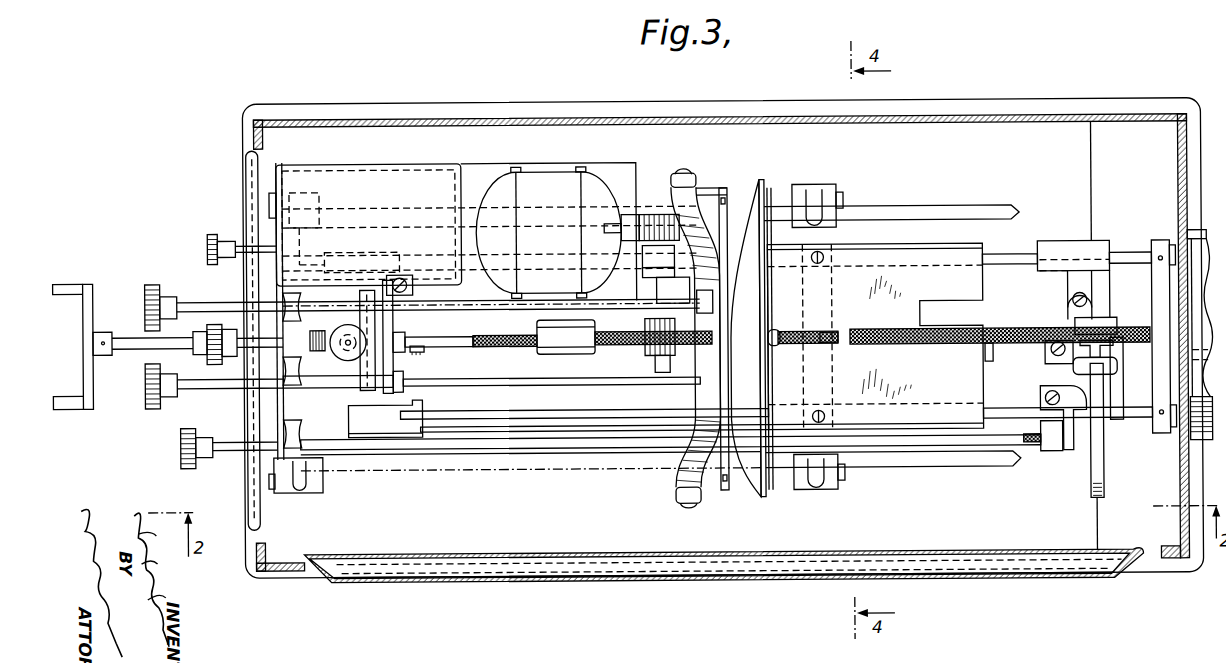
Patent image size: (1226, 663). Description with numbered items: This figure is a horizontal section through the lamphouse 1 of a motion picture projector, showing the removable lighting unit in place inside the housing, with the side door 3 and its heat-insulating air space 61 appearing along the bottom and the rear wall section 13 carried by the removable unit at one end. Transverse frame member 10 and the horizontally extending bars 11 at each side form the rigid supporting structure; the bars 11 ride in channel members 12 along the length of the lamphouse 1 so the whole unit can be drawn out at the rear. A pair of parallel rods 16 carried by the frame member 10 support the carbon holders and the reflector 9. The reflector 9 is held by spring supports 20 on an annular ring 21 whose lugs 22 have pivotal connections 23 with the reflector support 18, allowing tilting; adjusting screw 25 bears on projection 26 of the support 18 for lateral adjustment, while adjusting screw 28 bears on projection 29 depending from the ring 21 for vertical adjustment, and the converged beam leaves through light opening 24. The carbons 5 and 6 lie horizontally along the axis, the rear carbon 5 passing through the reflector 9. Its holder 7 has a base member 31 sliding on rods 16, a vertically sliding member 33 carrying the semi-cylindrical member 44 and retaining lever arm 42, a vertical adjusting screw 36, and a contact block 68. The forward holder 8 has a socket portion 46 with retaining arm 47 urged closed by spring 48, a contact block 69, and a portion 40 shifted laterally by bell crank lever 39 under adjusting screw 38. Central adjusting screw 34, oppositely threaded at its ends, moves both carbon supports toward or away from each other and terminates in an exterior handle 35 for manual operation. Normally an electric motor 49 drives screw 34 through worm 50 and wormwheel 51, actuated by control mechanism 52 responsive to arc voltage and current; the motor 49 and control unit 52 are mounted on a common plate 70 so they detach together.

The lamphouse 1 is at (1160, 561).
The sliding door 3 is at (688, 581).
The carbon electrode 5 is at (503, 345).
The carbon electrode 6 is at (1005, 331).
The carbon holder 7 is at (406, 355).
The carbon holder 8 is at (1110, 308).
The reflector 9 is at (762, 312).
The frame member 10 is at (280, 405).
The horizontally extending bar 11 is at (909, 211).
The channel member 12 is at (777, 203).
The rear wall section 13 is at (261, 530).
The rod 16 is at (489, 413).
The reflector support 18 is at (698, 180).
The spring support 20 is at (757, 345).
The annular ring 21 is at (757, 488).
The supporting lug 22 is at (722, 190).
The pivotal connection 23 is at (667, 192).
The light opening 24 is at (1198, 370).
The adjusting screw 25 is at (190, 378).
The projection 26 is at (762, 393).
The adjusting screw 28 is at (222, 300).
The projection 29 is at (762, 290).
The base member 31 is at (385, 419).
The vertically sliding member 33 is at (344, 358).
The adjusting screw 34 is at (316, 327).
The handle 35 is at (86, 287).
The adjusting screw 36 is at (351, 360).
The adjusting screw 38 is at (549, 448).
The bell crank lever 39 is at (1064, 430).
The carbon support portion 40 is at (1117, 384).
The lever arm 42 is at (459, 344).
The semi-cylindrical member 44 is at (570, 347).
The socket portion 46 is at (1104, 329).
The retaining arm 47 is at (1100, 353).
The spring 48 is at (1104, 455).
The electric motor 49 is at (558, 233).
The worm 50 is at (663, 213).
The wormwheel 51 is at (662, 372).
The control mechanism 52 is at (484, 224).
The air space 61 is at (537, 578).
The contact block 68 is at (400, 276).
The contact block 69 is at (1084, 300).
The common plate 70 is at (634, 162).